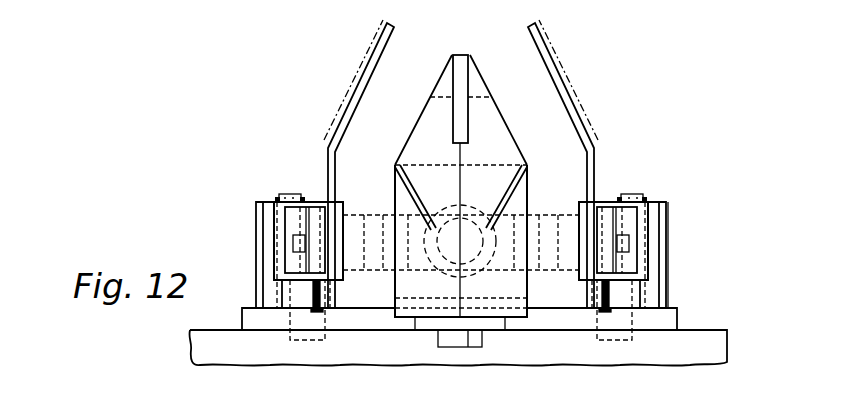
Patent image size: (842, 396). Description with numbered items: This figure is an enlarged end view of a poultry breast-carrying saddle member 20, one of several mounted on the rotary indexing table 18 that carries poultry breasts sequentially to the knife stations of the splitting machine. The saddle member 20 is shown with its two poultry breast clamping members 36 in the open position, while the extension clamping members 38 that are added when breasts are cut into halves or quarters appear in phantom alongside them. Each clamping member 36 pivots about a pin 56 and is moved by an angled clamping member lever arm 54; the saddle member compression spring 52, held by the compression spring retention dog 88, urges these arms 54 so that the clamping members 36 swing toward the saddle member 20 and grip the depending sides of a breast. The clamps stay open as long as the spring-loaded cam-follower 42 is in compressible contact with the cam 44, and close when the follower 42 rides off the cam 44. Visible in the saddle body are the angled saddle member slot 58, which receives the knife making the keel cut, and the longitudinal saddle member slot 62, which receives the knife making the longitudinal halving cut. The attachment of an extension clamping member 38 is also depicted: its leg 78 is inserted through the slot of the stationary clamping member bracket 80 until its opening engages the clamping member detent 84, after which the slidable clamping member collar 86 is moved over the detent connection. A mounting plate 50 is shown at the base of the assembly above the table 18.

The rotary indexing table 18 is at (190, 350).
The poultry breast-carrying saddle member 20 is at (444, 68).
The poultry breast clamping member 36 is at (363, 91).
The extension clamping member 38 is at (338, 82).
The spring-loaded cam-follower 42 is at (530, 200).
The cam 44 is at (382, 287).
The mounting plate 50 is at (680, 318).
The saddle member compression spring 52 is at (456, 201).
The angled clamping member lever arm 54 is at (323, 200).
The pin 56 is at (287, 193).
The angled saddle member slot 58 is at (395, 166).
The longitudinal saddle member slot 62 is at (460, 54).
The extension clamping member leg 78 is at (268, 292).
The stationary poultry breast clamping member bracket 80 is at (285, 248).
The poultry breast clamping member detent 84 is at (293, 243).
The slidable poultry breast clamping member collar 86 is at (668, 213).
The saddle member compression spring retention dog 88 is at (476, 202).